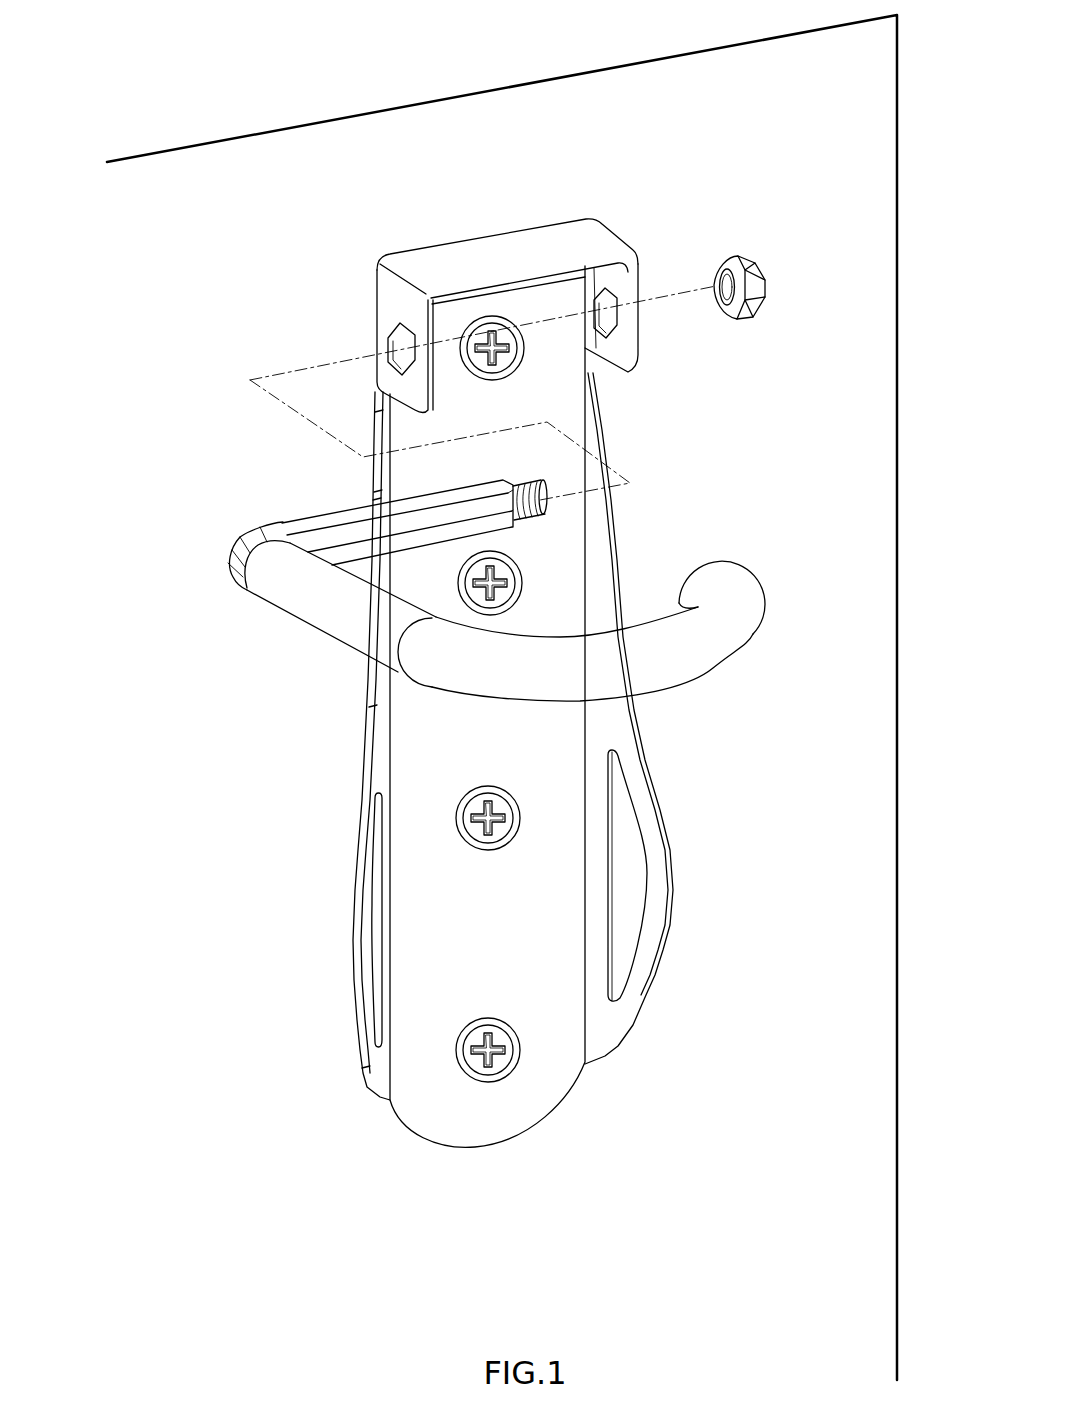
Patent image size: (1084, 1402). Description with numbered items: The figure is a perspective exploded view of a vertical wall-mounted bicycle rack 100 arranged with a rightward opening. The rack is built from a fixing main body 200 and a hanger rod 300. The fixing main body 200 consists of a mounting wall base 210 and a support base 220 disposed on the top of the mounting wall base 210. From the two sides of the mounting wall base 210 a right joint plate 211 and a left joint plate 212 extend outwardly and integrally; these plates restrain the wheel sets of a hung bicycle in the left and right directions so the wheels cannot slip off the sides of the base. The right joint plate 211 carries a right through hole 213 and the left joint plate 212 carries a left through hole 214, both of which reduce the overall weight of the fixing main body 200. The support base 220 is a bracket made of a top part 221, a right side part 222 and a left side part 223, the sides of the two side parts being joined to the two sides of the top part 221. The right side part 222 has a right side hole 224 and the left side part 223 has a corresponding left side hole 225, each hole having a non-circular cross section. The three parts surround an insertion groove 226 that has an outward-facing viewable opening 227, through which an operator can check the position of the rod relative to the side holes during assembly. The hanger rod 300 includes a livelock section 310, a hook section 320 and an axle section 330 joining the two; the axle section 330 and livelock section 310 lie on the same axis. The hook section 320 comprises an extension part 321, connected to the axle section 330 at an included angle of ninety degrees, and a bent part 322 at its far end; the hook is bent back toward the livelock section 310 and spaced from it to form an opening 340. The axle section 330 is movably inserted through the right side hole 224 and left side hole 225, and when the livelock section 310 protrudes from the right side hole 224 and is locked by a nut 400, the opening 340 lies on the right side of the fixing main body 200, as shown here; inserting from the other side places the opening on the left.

The vertical wall-mounted bicycle rack 100 is at (700, 1075).
The fixing main body 200 is at (513, 753).
The mounting wall base 210 is at (560, 1090).
The right joint plate 211 is at (657, 857).
The left joint plate 212 is at (367, 905).
The right through hole 213 is at (644, 903).
The left through hole 214 is at (370, 952).
The support base 220 is at (514, 269).
The top part 221 is at (515, 280).
The right side part 222 is at (633, 297).
The left side part 223 is at (343, 323).
The right side hole 224 is at (680, 277).
The left side hole 225 is at (390, 352).
The insertion groove 226 is at (554, 298).
The viewable opening 227 is at (478, 293).
The hanger rod 300 is at (498, 584).
The livelock section 310 is at (556, 469).
The hook section 320 is at (498, 652).
The extension part 321 is at (303, 615).
The bent part 322 is at (643, 678).
The axle section 330 is at (443, 475).
The opening 340 is at (684, 524).
The nut 400 is at (760, 280).